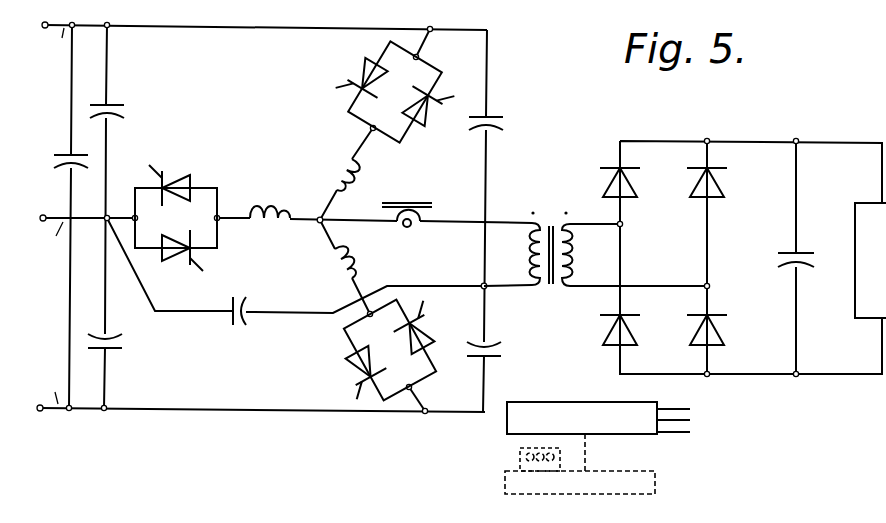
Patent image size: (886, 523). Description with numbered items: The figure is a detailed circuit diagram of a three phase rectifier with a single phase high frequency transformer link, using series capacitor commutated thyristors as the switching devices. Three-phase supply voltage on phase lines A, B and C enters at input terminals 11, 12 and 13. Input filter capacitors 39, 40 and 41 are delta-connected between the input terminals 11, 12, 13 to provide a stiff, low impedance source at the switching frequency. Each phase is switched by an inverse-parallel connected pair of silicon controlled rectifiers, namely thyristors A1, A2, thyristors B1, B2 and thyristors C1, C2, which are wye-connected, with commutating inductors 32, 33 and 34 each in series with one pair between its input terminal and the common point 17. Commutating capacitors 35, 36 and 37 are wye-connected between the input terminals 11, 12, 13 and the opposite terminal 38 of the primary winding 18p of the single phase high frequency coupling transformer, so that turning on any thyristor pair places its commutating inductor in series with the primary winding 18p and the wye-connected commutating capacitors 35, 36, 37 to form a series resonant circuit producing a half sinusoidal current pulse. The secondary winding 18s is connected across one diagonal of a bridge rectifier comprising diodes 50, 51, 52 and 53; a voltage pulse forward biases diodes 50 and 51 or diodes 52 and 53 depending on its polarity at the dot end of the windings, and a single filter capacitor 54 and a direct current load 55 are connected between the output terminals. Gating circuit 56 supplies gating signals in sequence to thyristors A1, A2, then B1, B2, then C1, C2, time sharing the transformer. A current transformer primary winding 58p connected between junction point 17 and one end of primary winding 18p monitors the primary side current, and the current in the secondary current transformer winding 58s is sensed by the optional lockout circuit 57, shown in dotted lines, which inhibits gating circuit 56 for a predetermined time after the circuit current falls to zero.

The input terminal 11 is at (43, 39).
The input terminal 12 is at (41, 423).
The input terminal 13 is at (47, 203).
The phase A line A is at (60, 44).
The phase B line B is at (49, 389).
The phase C line C is at (53, 234).
The common point 17 is at (317, 223).
The primary winding 18p is at (530, 245).
The secondary winding 18s is at (570, 269).
The commutating inductor 32 is at (341, 160).
The commutating inductor 33 is at (335, 275).
The commutating inductor 34 is at (262, 210).
The commutating capacitor 35 is at (493, 117).
The commutating capacitor 36 is at (488, 359).
The commutating capacitor 37 is at (230, 318).
The opposite terminal 38 is at (487, 290).
The input filter capacitor 39 is at (67, 152).
The input filter capacitor 40 is at (111, 349).
The input filter capacitor 41 is at (117, 104).
The diode 50 is at (608, 184).
The diode 51 is at (695, 332).
The diode 52 is at (696, 184).
The diode 53 is at (608, 330).
The filter capacitor 54 is at (806, 254).
The direct current load 55 is at (854, 304).
The gating circuit 56 is at (581, 403).
The lockout circuit 57 is at (658, 483).
The current transformer primary winding 58p is at (412, 228).
The secondary current transformer winding 58s is at (520, 453).
The silicon controlled rectifier A1 is at (360, 58).
The silicon controlled rectifier A2 is at (427, 118).
The silicon controlled rectifier B1 is at (426, 330).
The silicon controlled rectifier B2 is at (348, 371).
The silicon controlled rectifier C1 is at (174, 263).
The silicon controlled rectifier C2 is at (173, 185).